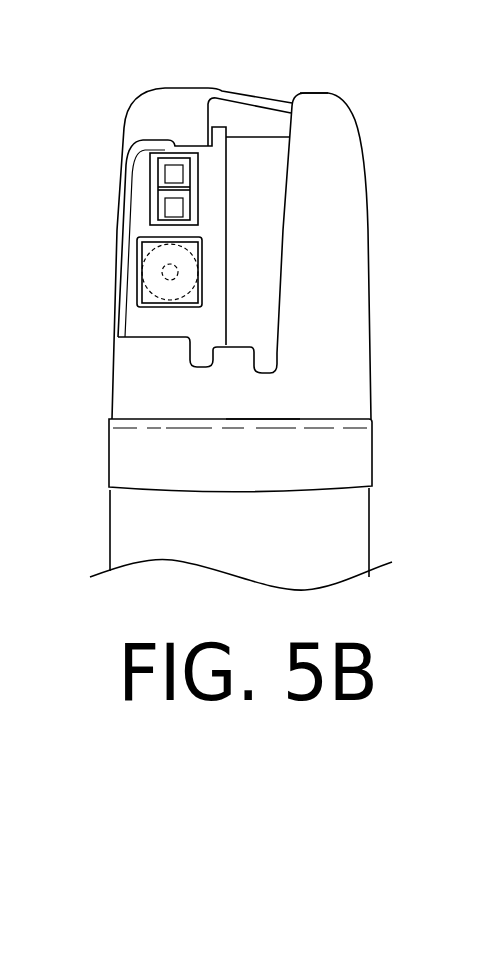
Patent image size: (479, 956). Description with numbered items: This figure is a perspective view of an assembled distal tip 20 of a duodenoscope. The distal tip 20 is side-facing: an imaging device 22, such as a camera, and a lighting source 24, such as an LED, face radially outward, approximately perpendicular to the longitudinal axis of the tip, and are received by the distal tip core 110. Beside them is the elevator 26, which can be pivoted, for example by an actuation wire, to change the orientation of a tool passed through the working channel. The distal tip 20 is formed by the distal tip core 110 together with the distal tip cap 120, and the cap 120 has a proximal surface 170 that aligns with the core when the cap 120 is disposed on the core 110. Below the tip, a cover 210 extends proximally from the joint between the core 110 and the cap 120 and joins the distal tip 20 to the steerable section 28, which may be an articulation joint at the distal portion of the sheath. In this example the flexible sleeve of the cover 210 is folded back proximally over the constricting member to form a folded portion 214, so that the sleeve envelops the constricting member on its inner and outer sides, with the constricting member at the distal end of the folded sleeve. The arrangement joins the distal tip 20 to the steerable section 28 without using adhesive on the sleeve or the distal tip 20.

The distal tip 20 is at (254, 315).
The imaging device 22 is at (168, 271).
The lighting source 24 is at (166, 172).
The elevator 26 is at (256, 163).
The steerable section 28 is at (345, 537).
The distal tip core 110 is at (137, 442).
The distal tip cap 120 is at (348, 177).
The proximal surface 170 is at (318, 418).
The cover 210 is at (130, 527).
The folded portion 214 is at (362, 452).